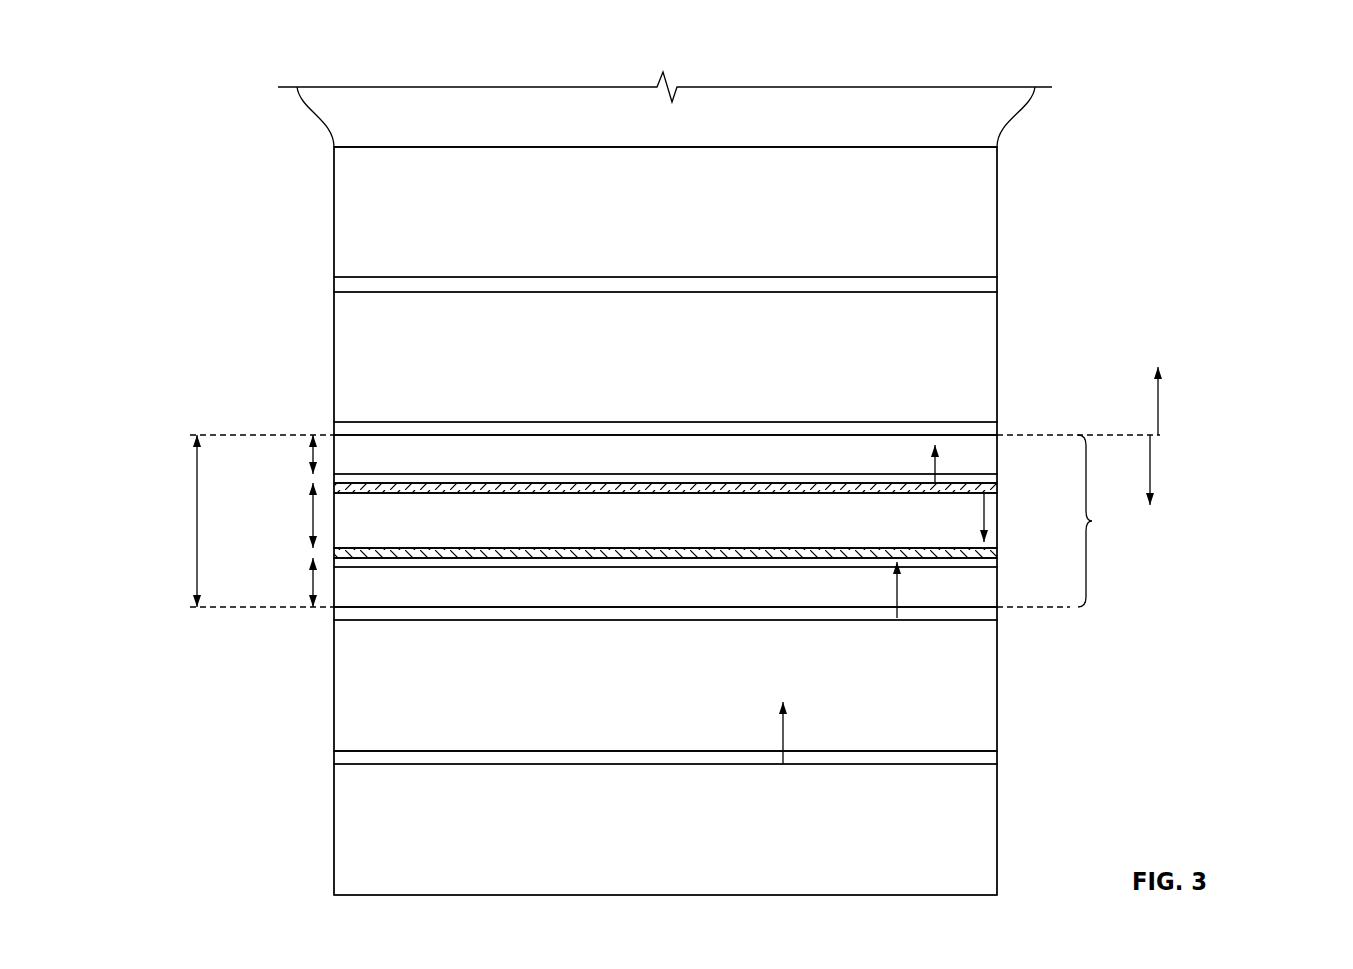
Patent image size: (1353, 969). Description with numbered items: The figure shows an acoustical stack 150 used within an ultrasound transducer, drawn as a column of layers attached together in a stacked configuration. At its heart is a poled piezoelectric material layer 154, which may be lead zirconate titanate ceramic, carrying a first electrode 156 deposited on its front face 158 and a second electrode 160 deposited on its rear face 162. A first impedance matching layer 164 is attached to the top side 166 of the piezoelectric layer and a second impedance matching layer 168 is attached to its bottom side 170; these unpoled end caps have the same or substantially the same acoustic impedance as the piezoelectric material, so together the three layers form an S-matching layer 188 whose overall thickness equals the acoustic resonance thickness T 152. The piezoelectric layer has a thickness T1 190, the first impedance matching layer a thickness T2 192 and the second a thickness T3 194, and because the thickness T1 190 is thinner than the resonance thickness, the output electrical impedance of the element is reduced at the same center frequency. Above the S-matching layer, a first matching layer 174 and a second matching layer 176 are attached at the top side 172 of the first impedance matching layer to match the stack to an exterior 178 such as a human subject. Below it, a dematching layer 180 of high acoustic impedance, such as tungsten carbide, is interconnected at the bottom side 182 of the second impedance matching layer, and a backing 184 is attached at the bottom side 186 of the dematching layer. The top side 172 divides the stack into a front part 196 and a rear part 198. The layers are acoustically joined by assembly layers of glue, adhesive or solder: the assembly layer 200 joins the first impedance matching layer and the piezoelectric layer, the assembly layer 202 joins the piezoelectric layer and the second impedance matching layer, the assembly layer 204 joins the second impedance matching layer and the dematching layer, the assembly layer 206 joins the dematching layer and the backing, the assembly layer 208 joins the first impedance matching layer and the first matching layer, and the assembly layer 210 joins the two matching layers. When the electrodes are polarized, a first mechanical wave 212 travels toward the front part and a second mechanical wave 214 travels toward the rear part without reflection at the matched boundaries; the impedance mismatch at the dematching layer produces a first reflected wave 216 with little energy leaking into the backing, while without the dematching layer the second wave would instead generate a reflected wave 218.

The acoustical stack 150 is at (208, 86).
The acoustic resonance thickness T 152 is at (197, 523).
The poled piezoelectric material layer 154 is at (383, 532).
The first electrode 156 is at (990, 487).
The front face 158 is at (390, 495).
The second electrode 160 is at (990, 553).
The rear face 162 is at (907, 548).
The first impedance matching layer 164 is at (383, 466).
The top side 166 is at (838, 483).
The second impedance matching layer 168 is at (383, 599).
The bottom side 170 is at (843, 558).
The top side 172 is at (438, 435).
The first matching layer 174 is at (946, 366).
The second matching layer 176 is at (946, 222).
The exterior 178 is at (946, 129).
The dematching layer 180 is at (946, 694).
The bottom side 182 is at (667, 607).
The backing 184 is at (946, 842).
The bottom side 186 is at (858, 752).
The S-matching layer 188 is at (1078, 521).
The thickness T1 190 is at (313, 520).
The thickness T2 192 is at (313, 455).
The thickness T3 194 is at (313, 585).
The front part 196 is at (1158, 405).
The rear part 198 is at (1150, 465).
The assembly layer 200 is at (990, 478).
The assembly layer 202 is at (990, 562).
The assembly layer 204 is at (990, 613).
The assembly layer 206 is at (990, 756).
The assembly layer 208 is at (990, 430).
The assembly layer 210 is at (993, 286).
The first mechanical wave 212 is at (935, 462).
The second mechanical wave 214 is at (984, 506).
The first reflected wave 216 is at (897, 596).
The reflected wave 218 is at (785, 728).